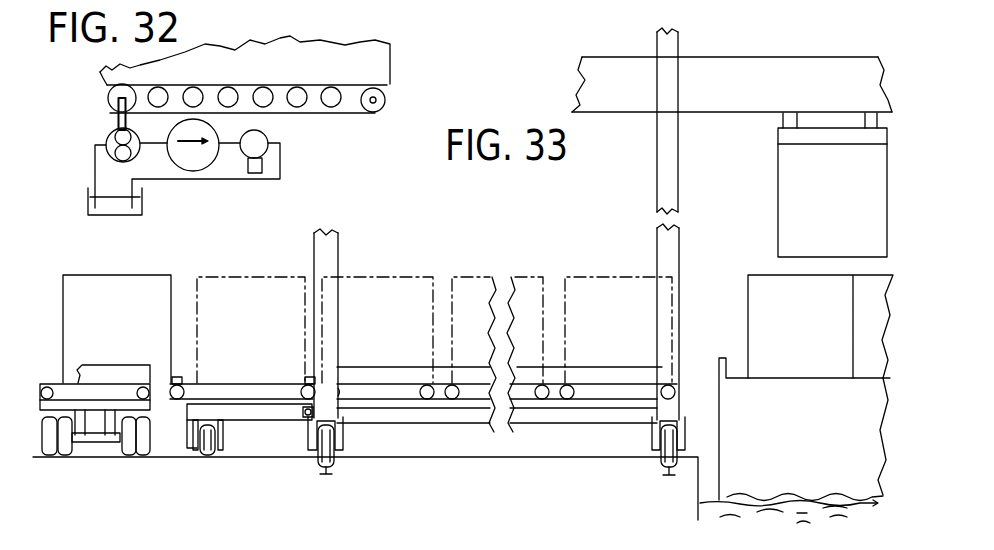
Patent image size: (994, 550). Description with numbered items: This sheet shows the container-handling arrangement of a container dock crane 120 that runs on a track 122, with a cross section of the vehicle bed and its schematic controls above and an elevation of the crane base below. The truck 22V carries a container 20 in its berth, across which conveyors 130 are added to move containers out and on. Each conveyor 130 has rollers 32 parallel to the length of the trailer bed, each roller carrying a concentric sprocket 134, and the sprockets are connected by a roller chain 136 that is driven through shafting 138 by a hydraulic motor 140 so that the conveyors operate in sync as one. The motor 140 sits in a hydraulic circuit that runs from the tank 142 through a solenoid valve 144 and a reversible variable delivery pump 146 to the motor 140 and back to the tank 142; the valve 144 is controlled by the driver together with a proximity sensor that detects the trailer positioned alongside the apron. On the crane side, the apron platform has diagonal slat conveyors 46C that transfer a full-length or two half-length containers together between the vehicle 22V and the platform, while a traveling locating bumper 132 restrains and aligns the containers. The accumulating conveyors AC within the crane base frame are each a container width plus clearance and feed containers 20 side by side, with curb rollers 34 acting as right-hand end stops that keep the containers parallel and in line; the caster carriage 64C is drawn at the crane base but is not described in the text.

In FIG. 32, the container 20 is at (383, 56).
In FIG. 33, the container 20 is at (280, 280).
In FIG. 32, the rollers 32 is at (330, 88).
In FIG. 32, the sprocket 134 is at (383, 99).
In FIG. 32, the shafting 138 is at (117, 117).
In FIG. 32, the truck 22V is at (100, 121).
In FIG. 33, the truck 22V is at (95, 441).
In FIG. 32, the hydraulic motor 140 is at (110, 133).
In FIG. 32, the tank 142 is at (90, 208).
In FIG. 32, the solenoid valve 144 is at (255, 174).
In FIG. 32, the reversible variable delivery pump 146 is at (182, 168).
In FIG. 32, the conveyors 130 is at (292, 105).
In FIG. 33, the conveyors 130 is at (45, 387).
In FIG. 32, the roller chain 136 is at (363, 115).
In FIG. 33, the dock crane 120 is at (660, 177).
In FIG. 33, the track 122 is at (333, 468).
In FIG. 33, the curb rollers 34 is at (92, 363).
In FIG. 33, the diagonal slat conveyors 46C is at (213, 385).
In FIG. 33, the traveling locating bumper 132 is at (307, 377).
In FIG. 33, the caster carriage 64C is at (220, 448).
In FIG. 33, the accumulating conveyors AC is at (583, 401).